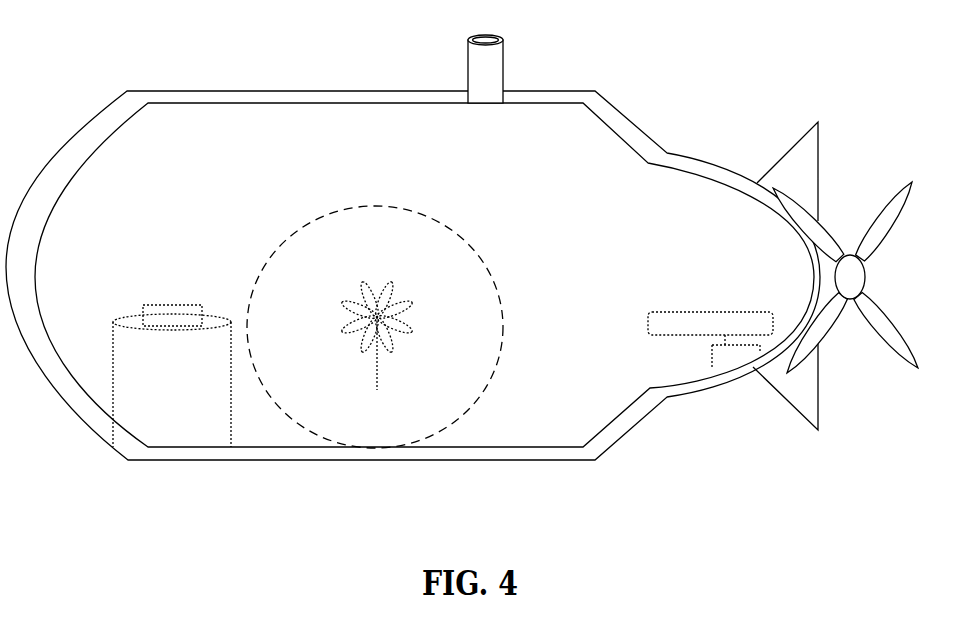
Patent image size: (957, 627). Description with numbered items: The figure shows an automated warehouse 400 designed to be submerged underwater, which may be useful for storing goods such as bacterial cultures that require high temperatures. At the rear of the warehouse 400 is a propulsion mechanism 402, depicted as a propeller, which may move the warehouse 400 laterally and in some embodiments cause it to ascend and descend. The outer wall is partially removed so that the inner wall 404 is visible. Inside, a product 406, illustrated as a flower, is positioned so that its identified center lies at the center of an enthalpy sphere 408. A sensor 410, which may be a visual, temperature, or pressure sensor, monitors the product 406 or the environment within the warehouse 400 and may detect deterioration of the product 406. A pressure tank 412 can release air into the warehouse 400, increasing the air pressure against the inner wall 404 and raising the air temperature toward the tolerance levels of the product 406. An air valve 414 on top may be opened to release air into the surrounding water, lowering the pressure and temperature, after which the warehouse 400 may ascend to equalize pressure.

The automated warehouse 400 is at (277, 99).
The propulsion mechanism 402 is at (908, 360).
The inner wall 404 is at (282, 166).
The product 406 is at (340, 300).
The enthalpy sphere 408 is at (468, 247).
The sensor 410 is at (688, 318).
The pressure tank 412 is at (172, 315).
The air valve 414 is at (495, 75).